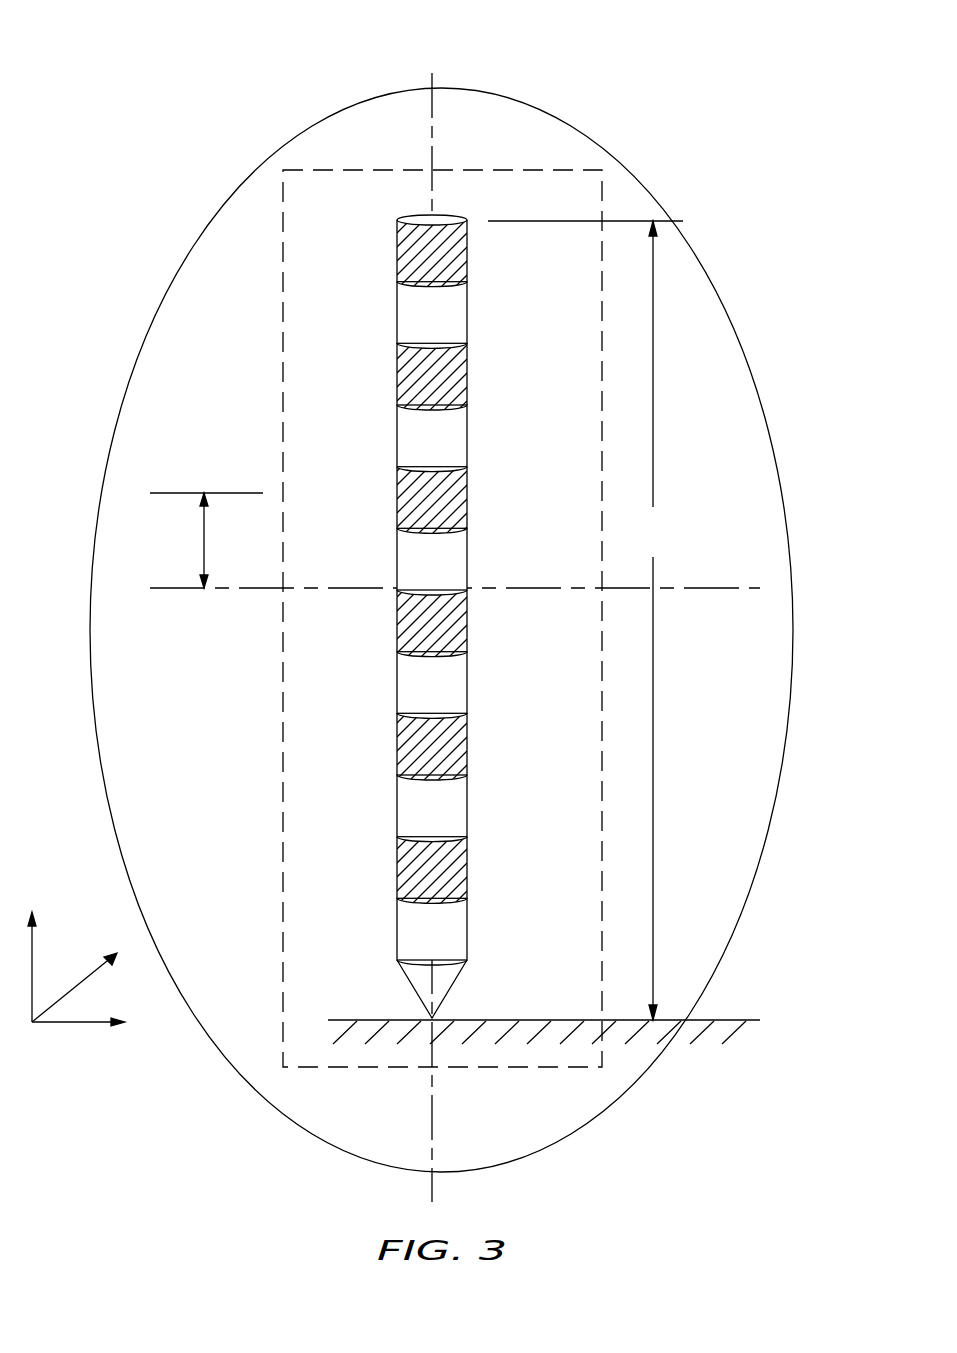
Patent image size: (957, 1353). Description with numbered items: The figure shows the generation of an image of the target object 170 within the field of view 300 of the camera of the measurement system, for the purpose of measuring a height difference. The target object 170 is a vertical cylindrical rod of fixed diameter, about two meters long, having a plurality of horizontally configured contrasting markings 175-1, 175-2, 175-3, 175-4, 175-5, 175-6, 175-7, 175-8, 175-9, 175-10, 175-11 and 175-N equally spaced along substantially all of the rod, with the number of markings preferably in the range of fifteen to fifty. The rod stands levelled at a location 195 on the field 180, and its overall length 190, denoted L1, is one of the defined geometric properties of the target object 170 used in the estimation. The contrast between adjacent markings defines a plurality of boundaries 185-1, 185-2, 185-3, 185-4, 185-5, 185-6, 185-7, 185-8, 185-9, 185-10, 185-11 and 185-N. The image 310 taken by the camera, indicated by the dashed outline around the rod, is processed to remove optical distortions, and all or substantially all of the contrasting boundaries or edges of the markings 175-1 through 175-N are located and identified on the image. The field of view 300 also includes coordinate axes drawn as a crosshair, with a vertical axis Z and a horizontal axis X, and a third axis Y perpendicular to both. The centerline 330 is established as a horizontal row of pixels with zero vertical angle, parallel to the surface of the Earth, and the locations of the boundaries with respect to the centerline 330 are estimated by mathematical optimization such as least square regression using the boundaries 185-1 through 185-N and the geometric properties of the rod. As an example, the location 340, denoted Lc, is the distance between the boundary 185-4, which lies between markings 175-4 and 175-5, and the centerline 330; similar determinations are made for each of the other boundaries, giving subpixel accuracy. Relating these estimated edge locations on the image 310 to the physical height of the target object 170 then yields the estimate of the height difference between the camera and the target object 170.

The field of view 300 is at (537, 108).
The target object 170 is at (413, 219).
The contrasting marking 175-1 is at (467, 256).
The contrasting marking 175-2 is at (467, 319).
The contrasting marking 175-3 is at (467, 379).
The contrasting marking 175-4 is at (467, 440).
The contrasting marking 175-5 is at (467, 501).
The contrasting marking 175-6 is at (467, 558).
The contrasting marking 175-7 is at (467, 606).
The contrasting marking 175-8 is at (467, 680).
The contrasting marking 175-9 is at (467, 740).
The contrasting marking 175-10 is at (467, 802).
The contrasting marking 175-11 is at (467, 863).
The contrasting marking 175-N is at (467, 935).
The boundary 185-1 is at (397, 282).
The boundary 185-2 is at (397, 343).
The boundary 185-3 is at (397, 405).
The boundary 185-4 is at (397, 467).
The boundary 185-5 is at (397, 528).
The boundary 185-6 is at (397, 590).
The boundary 185-7 is at (397, 652).
The boundary 185-8 is at (397, 713).
The boundary 185-9 is at (397, 775).
The boundary 185-10 is at (397, 837).
The boundary 185-11 is at (397, 898).
The boundary 185-N is at (397, 960).
The length 190 is at (672, 536).
The location 195 is at (445, 1017).
The field 180 is at (700, 1044).
The image 310 is at (282, 865).
The centerline 330 is at (712, 598).
The location 340 is at (190, 534).